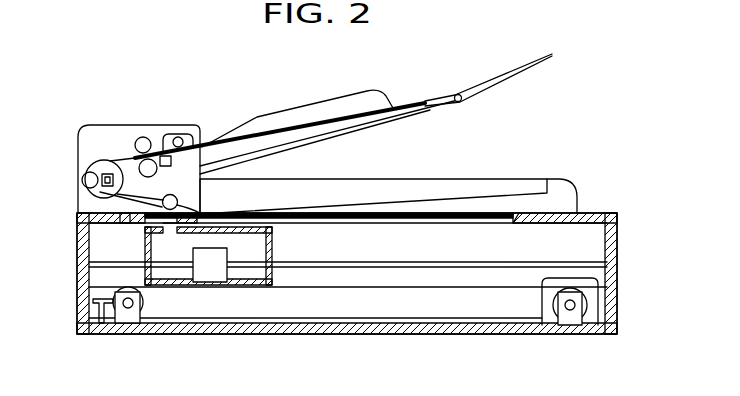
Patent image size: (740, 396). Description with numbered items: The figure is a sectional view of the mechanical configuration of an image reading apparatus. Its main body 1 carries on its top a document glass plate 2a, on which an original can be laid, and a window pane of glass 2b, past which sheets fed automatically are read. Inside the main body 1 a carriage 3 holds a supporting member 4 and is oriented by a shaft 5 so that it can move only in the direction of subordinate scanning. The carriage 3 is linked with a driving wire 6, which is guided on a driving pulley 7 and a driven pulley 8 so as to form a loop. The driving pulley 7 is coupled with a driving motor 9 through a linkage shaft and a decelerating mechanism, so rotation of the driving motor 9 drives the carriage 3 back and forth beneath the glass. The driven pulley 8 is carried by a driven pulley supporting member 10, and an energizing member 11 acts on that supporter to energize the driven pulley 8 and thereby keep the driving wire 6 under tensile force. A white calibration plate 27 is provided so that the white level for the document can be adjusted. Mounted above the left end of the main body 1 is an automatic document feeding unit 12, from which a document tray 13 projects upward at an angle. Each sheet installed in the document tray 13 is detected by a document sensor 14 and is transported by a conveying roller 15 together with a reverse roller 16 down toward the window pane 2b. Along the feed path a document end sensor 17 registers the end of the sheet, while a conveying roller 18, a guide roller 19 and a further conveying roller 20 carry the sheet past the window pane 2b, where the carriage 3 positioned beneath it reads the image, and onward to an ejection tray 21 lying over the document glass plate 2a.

The main body 1 is at (413, 336).
The document glass plate 2a is at (441, 212).
The window pane of glass 2b is at (173, 223).
The carriage 3 is at (283, 237).
The supporting member 4 is at (210, 274).
The shaft 5 is at (298, 268).
The driving wire 6 is at (349, 320).
The driving pulley 7 is at (552, 306).
The driven pulley 8 is at (95, 288).
The driving motor 9 is at (590, 318).
The driven pulley supporting member 10 is at (128, 318).
The energizing member 11 is at (92, 327).
The automatic document feeding unit 12 is at (118, 125).
The document tray 13 is at (485, 83).
The document sensor 14 is at (175, 135).
The conveying roller 15 is at (143, 137).
The reverse roller 16 is at (139, 166).
The document end sensor 17 is at (95, 170).
The conveying roller 18 is at (90, 190).
The guide roller 19 is at (82, 178).
The conveying roller 20 is at (180, 197).
The ejection tray 21 is at (378, 190).
The white calibration plate 27 is at (127, 227).